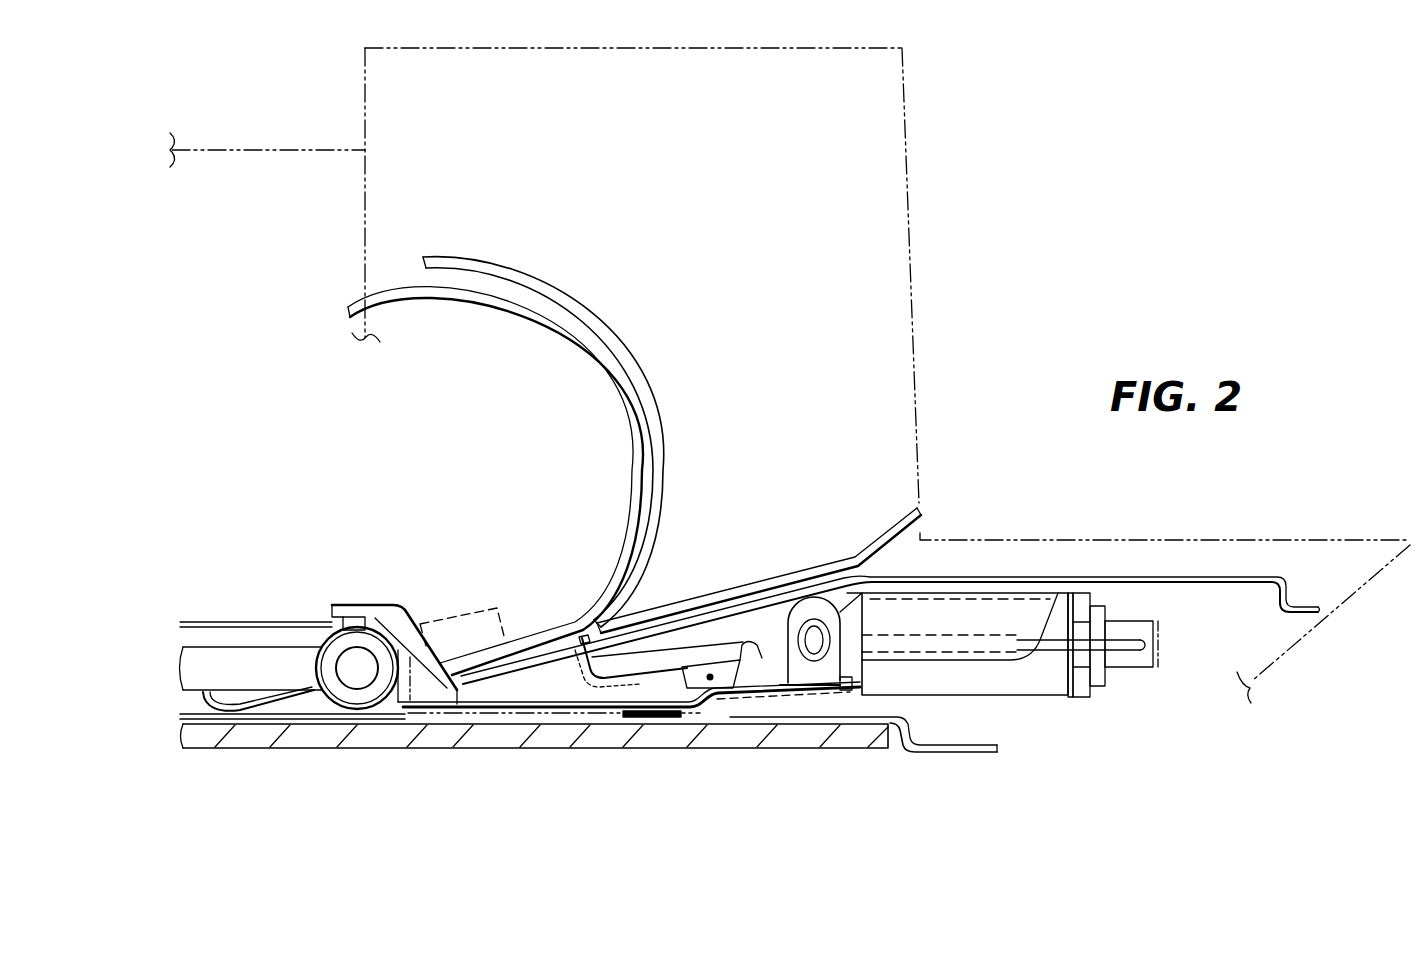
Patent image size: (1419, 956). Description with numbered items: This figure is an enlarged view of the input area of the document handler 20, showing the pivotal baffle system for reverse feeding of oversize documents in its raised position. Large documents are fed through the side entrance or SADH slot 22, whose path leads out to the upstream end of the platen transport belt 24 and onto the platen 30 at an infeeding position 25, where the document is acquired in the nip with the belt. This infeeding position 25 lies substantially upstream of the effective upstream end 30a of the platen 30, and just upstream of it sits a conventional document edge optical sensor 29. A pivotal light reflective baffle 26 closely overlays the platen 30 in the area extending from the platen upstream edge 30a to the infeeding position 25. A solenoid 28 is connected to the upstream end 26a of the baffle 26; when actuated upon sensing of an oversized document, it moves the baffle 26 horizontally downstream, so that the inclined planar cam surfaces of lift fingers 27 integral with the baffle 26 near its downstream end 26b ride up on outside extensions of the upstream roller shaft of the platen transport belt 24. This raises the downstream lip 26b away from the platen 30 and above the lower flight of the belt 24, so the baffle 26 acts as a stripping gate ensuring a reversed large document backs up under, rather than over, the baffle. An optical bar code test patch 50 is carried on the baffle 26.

The document handler 20 is at (948, 163).
The SADH slot 22 is at (916, 556).
The platen transport belt 24 is at (193, 713).
The infeeding position 25 is at (386, 720).
The infeeding area light reflective baffle 26 is at (578, 707).
The upstream end of the baffle 26a is at (820, 687).
The downstream end of the baffle 26b is at (407, 660).
The lift fingers 27 is at (397, 633).
The solenoid 28 is at (1047, 697).
The document edge optical sensor 29 is at (446, 610).
The platen 30 is at (500, 733).
The effective upstream end of the platen 30a is at (730, 722).
The optical bar code test patch 50 is at (650, 720).